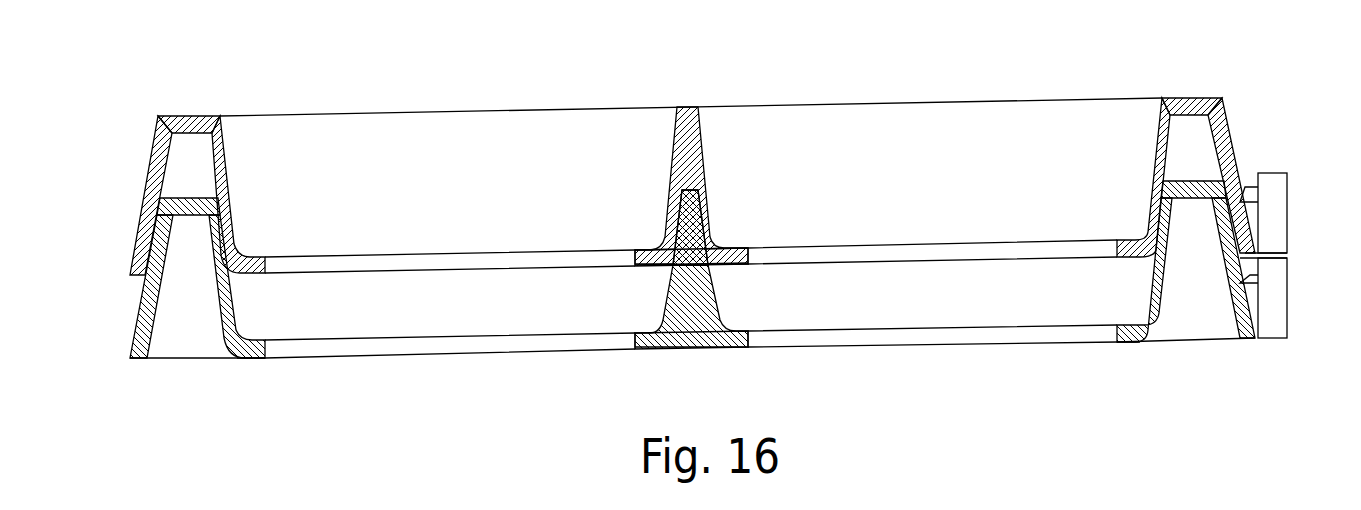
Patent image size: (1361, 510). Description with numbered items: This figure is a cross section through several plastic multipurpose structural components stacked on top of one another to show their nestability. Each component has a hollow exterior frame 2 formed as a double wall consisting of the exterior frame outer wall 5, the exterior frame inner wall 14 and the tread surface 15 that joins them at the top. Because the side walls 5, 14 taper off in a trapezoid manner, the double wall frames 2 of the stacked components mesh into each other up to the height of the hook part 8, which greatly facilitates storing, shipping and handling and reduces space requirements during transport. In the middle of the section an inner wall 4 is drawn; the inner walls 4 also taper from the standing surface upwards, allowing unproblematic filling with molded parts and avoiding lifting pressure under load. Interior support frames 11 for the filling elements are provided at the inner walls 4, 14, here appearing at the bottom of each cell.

The hollow exterior frame 2 is at (698, 214).
The inner walls 4 is at (702, 138).
The exterior frame outer wall 5 is at (153, 168).
The hook part 8 is at (1275, 227).
The interior support frames 11 is at (255, 359).
The exterior frame inner wall 14 is at (226, 157).
The tread surface 15 is at (197, 120).